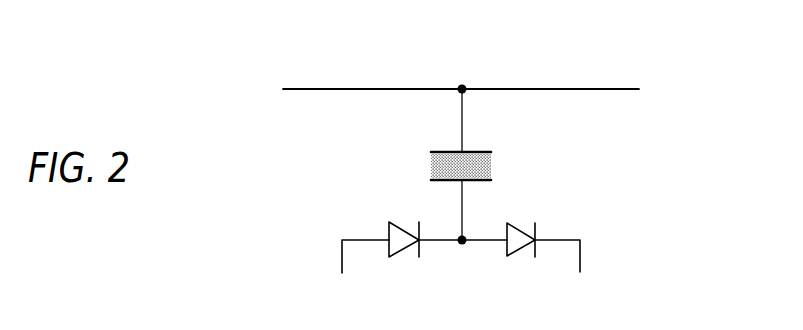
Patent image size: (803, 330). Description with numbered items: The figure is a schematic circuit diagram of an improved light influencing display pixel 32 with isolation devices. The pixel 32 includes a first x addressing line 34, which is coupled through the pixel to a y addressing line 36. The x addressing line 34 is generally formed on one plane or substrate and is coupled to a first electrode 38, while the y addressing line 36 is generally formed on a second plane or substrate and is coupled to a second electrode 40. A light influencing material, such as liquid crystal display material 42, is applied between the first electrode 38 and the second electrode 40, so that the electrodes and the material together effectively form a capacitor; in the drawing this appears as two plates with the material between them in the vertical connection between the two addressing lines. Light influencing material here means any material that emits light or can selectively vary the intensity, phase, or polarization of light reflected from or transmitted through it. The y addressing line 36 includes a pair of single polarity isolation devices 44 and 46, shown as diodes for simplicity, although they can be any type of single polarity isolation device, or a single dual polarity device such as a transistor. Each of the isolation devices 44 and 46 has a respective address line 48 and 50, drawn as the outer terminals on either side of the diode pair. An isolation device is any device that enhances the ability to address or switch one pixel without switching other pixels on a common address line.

The light influencing display pixel 32 is at (628, 154).
The first x addressing line 34 is at (389, 88).
The y addressing line 36 is at (464, 208).
The first electrode 38 is at (478, 151).
The second electrode 40 is at (443, 183).
The liquid crystal display material 42 is at (478, 163).
The single polarity isolation device 44 is at (403, 253).
The single polarity isolation device 46 is at (516, 250).
The address line 48 is at (339, 256).
The address line 50 is at (582, 258).